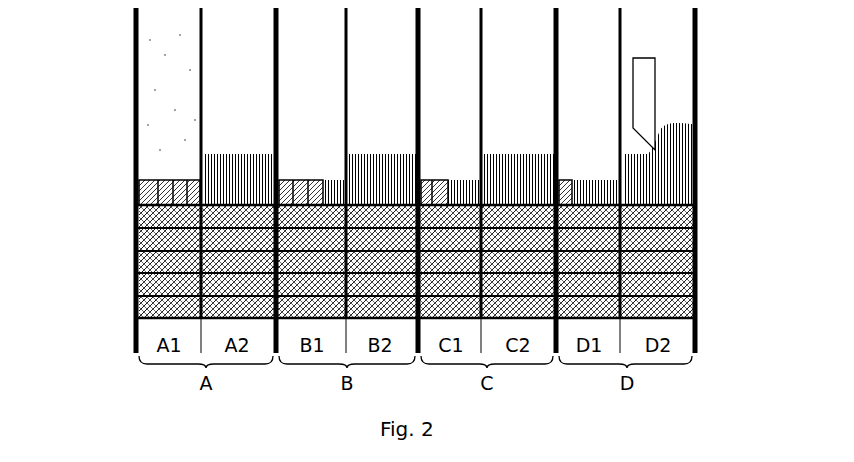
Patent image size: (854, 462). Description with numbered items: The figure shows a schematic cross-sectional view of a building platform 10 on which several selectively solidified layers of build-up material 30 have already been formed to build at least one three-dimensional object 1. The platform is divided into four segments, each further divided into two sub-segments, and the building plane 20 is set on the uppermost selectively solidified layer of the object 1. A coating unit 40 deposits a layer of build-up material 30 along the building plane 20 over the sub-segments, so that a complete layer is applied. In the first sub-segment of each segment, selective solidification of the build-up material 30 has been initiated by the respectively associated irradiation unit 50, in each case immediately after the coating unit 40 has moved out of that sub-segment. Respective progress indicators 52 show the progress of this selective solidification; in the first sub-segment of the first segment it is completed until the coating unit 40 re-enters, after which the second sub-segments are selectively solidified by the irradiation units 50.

The three-dimensional object 1 is at (683, 287).
The building platform 10 is at (680, 320).
The building plane 20 is at (673, 197).
The build-up material 30 is at (248, 172).
The coating unit 40 is at (647, 100).
The irradiation unit 50 is at (172, 128).
The progress indicator 52 is at (164, 192).